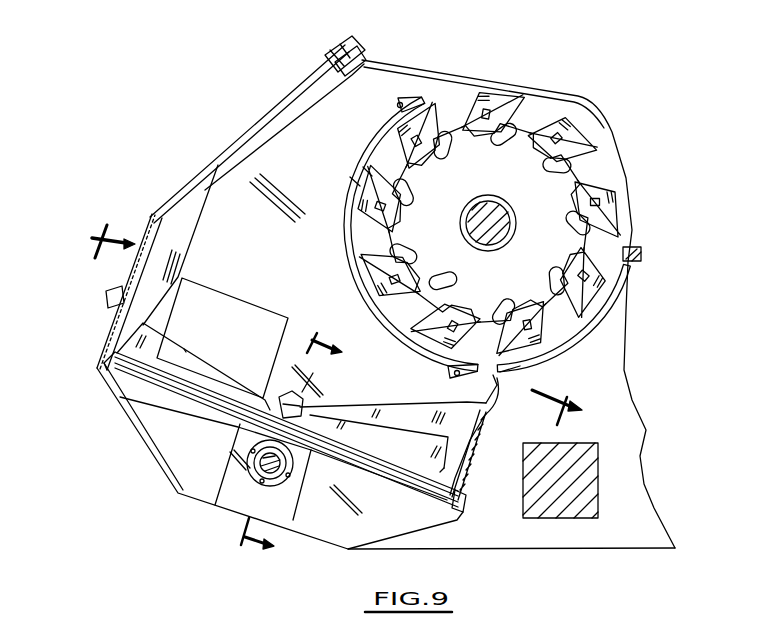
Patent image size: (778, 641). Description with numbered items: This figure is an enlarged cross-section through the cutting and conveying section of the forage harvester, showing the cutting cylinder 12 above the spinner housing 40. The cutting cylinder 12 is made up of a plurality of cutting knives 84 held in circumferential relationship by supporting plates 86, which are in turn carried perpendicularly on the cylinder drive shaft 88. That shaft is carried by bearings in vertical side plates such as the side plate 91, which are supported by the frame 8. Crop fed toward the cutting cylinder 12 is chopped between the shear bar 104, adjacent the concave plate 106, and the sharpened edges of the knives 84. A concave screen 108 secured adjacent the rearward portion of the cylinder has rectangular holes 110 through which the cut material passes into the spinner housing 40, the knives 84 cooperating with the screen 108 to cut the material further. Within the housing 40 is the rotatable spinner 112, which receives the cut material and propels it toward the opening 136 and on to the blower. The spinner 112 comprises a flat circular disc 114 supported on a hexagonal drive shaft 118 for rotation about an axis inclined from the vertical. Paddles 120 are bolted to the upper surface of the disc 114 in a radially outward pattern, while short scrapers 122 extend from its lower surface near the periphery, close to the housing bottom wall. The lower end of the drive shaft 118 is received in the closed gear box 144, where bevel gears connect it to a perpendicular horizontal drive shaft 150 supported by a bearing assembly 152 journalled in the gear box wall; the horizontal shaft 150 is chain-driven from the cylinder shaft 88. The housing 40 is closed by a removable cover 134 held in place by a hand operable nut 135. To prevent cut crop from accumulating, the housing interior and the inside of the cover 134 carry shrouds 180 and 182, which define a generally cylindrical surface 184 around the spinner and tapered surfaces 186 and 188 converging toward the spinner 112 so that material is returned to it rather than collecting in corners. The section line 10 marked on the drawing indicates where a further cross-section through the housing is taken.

The frame 8 is at (593, 475).
The section line 10- 10 is at (332, 325).
The cutting cylinder 12 is at (600, 183).
The spinner housing 40 is at (130, 428).
The cutting knives 84 is at (530, 132).
The supporting plates 86 is at (505, 183).
The cylinder drive shaft 88 is at (498, 221).
The side plate 91 is at (624, 540).
The shear bar 104 is at (641, 253).
The concave plate 106 is at (596, 318).
The concave screen 108 is at (375, 140).
The rectangular holes 110 is at (350, 177).
The rotatable spinner 112 is at (186, 345).
The circular disc 114 is at (440, 468).
The hexagonal drive shaft 118 is at (297, 397).
The paddles 120 is at (207, 360).
The scrapers 122 is at (386, 458).
The removable cover 134 is at (268, 120).
The hand operable nut 135 is at (333, 50).
The opening 136 is at (243, 305).
The gear box 144 is at (227, 498).
The horizontal drive shaft 150 is at (282, 472).
The bearing assembly 152 is at (252, 466).
The shroud 180 is at (478, 424).
The shroud 182 is at (205, 213).
The cylindrical surface 184 is at (466, 440).
The tapered surface 186 is at (412, 406).
The tapered surface 188 is at (505, 388).